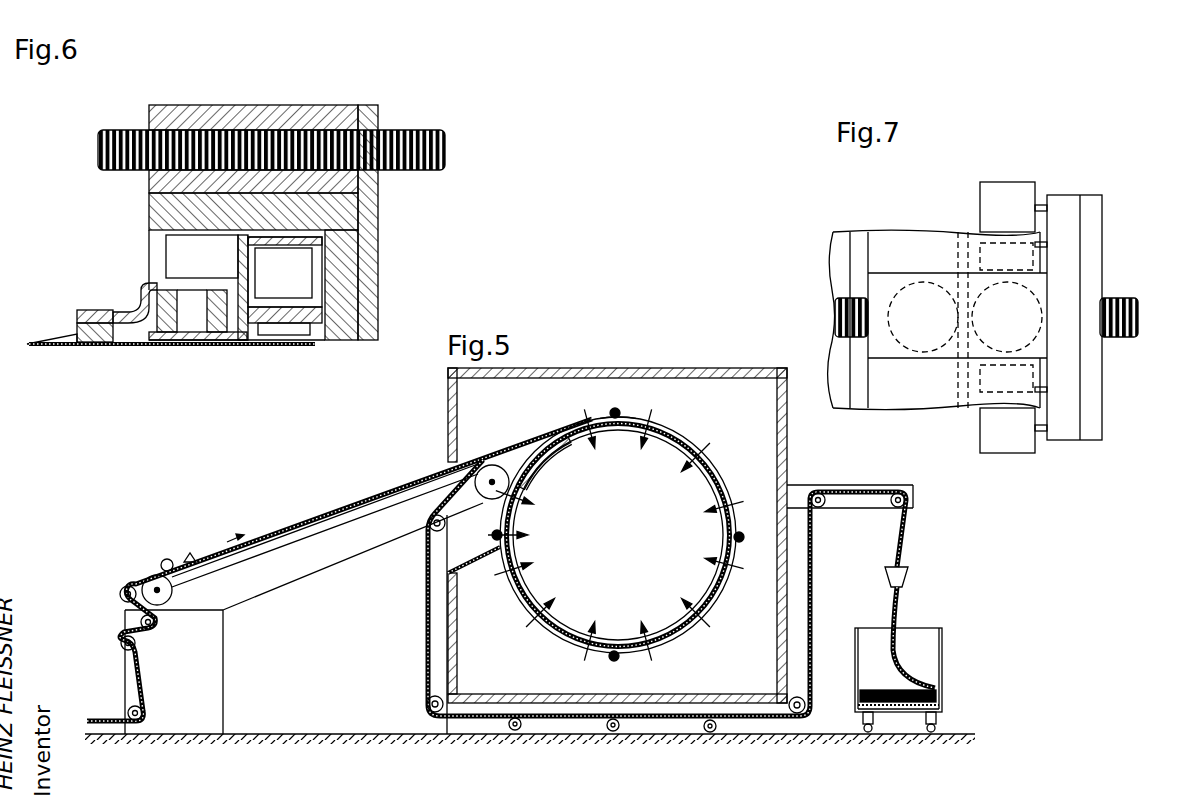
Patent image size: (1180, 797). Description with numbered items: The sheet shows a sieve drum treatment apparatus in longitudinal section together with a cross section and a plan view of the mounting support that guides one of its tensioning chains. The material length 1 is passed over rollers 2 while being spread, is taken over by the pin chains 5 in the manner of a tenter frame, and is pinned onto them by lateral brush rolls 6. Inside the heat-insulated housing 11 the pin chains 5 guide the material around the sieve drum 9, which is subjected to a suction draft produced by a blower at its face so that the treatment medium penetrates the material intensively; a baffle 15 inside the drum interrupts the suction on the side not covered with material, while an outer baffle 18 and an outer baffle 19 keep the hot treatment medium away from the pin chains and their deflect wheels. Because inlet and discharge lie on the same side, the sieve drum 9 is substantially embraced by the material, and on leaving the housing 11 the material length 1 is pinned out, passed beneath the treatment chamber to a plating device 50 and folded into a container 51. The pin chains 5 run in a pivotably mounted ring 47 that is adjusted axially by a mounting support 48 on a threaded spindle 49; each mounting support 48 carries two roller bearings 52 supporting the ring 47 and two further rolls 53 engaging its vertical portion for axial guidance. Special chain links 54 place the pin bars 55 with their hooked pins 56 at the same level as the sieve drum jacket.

In FIG. 5, the material length 1 is at (105, 717).
In FIG. 5, the rollers 2 is at (137, 638).
In FIG. 5, the pin chains 5 is at (197, 588).
In FIG. 5, the lateral brush rolls 6 is at (163, 559).
In FIG. 6, the sieve drum 9 is at (134, 348).
In FIG. 5, the sieve drum 9 is at (532, 478).
In FIG. 5, the heat-insulated housing 11 is at (637, 368).
In FIG. 5, the baffle 15 is at (552, 452).
In FIG. 5, the outer baffle 18 is at (503, 446).
In FIG. 5, the outer baffle 19 is at (473, 572).
In FIG. 6, the ring 47 is at (243, 336).
In FIG. 7, the ring 47 is at (993, 242).
In FIG. 5, the ring 47 is at (667, 427).
In FIG. 6, the mounting support 48 is at (372, 200).
In FIG. 7, the mounting support 48 is at (1093, 371).
In FIG. 5, the mounting support 48 is at (613, 408).
In FIG. 6, the threaded spindle 49 is at (122, 130).
In FIG. 7, the threaded spindle 49 is at (1113, 300).
In FIG. 5, the threaded spindle 49 is at (621, 412).
In FIG. 5, the plating device 50 is at (900, 535).
In FIG. 5, the container 51 is at (872, 640).
In FIG. 6, the roller bearings 52 is at (290, 335).
In FIG. 7, the roller bearings 52 is at (985, 200).
In FIG. 6, the rolls 53 is at (175, 249).
In FIG. 7, the rolls 53 is at (928, 351).
In FIG. 6, the chain links 54 is at (167, 325).
In FIG. 7, the chain links 54 is at (835, 268).
In FIG. 6, the pin bars 55 is at (98, 346).
In FIG. 6, the hooked pins 56 is at (62, 329).